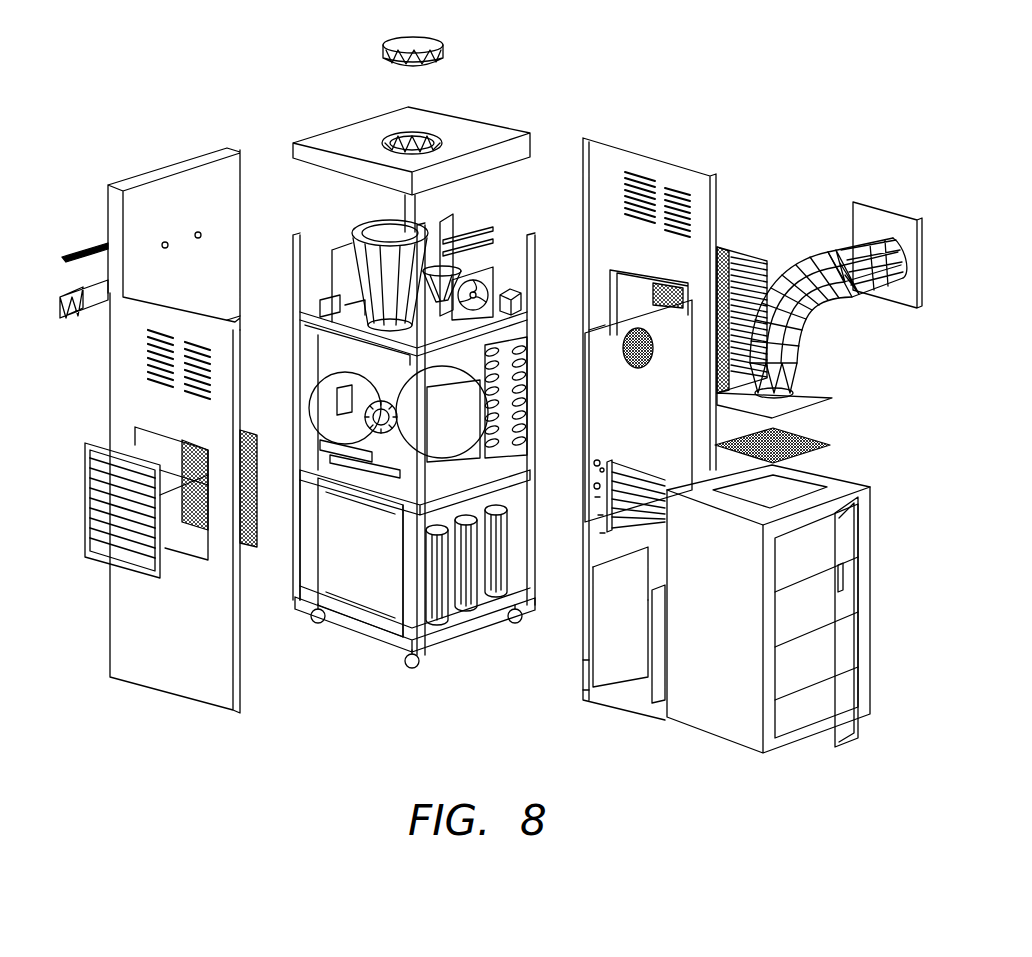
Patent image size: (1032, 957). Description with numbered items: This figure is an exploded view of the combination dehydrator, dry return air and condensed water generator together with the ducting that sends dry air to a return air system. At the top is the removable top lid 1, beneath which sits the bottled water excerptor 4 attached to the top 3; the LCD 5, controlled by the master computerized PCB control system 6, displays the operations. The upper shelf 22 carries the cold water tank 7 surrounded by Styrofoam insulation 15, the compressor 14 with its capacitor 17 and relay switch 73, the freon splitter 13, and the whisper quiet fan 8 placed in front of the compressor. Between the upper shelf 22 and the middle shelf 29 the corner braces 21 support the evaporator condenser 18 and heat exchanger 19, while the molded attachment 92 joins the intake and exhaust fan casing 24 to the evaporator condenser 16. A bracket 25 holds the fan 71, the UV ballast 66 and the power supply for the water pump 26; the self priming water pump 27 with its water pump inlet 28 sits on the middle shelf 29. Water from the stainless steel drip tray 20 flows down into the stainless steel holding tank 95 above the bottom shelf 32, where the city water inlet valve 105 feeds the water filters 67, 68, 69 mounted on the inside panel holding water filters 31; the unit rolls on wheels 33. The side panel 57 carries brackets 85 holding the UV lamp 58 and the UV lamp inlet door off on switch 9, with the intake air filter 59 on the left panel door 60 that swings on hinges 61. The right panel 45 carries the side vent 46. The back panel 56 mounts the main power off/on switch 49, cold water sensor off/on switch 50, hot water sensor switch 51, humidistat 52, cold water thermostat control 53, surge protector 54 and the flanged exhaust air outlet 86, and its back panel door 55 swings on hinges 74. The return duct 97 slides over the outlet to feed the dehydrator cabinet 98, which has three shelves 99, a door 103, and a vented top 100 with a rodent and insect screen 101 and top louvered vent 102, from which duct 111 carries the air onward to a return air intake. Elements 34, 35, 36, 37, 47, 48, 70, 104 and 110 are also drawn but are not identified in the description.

The top lid 1 is at (430, 32).
The top 3 is at (490, 126).
The bottled water excerptor 4 is at (418, 130).
The LCD 5 is at (480, 230).
The master computerized PCB control system 6 is at (482, 240).
The cold water tank 7 is at (372, 222).
The whisper quiet fan 8 is at (481, 291).
The UV lamp inlet door off on switch 9 is at (680, 270).
The freon splitter 13 is at (522, 304).
The compressor 14 is at (465, 272).
The Styrofoam insulation 15 is at (362, 228).
The evaporator condenser 16 is at (495, 445).
The capacitor 17 is at (340, 300).
The evaporator condenser 18 is at (503, 378).
The heat exchanger 19 is at (503, 395).
The stainless steel drip tray 20 is at (500, 460).
The corner braces 21 is at (293, 255).
The upper shelf 22 is at (500, 350).
The intake and exhaust fan casing 24 is at (505, 410).
The bracket 25 is at (350, 400).
The power supply for the water pump 26 is at (300, 472).
The self priming water pump 27 is at (366, 418).
The water pump inlet 28 is at (374, 427).
The middle shelf 29 is at (325, 459).
The inside panel holding water filters 31 is at (400, 545).
The bottom shelf 32 is at (455, 646).
The wheels 33 is at (311, 623).
The panel edge 34 is at (241, 322).
The side panel 35 is at (180, 162).
The strap 36 is at (78, 248).
The bar 37 is at (78, 286).
The right panel 45 is at (160, 690).
The side vent 46 is at (95, 440).
The filter strip 47 is at (247, 546).
The front panel 48 is at (685, 412).
The main power off/on switch 49 is at (597, 483).
The cold water sensor off/on switch 50 is at (602, 468).
The hot water sensor switch 51 is at (597, 460).
The humidistat 52 is at (598, 497).
The cold water thermostat control 53 is at (608, 508).
The surge protector 54 is at (615, 532).
The back panel door 55 is at (583, 690).
The back panel 56 is at (583, 660).
The side panel 57 is at (645, 152).
The UV lamp 58 is at (648, 285).
The intake air filter 59 is at (745, 262).
The left panel door 60 is at (735, 250).
The hinges 61 is at (165, 470).
The UV ballast 66 is at (338, 398).
The water filter 67 is at (432, 582).
The water filter 68 is at (452, 562).
The water filter 69 is at (475, 560).
The bracket 70 is at (335, 322).
The fan 71 is at (345, 380).
The relay switch 73 is at (345, 310).
The hinges 74 is at (648, 612).
The brackets 85 is at (615, 275).
The flanged exhaust air outlet 86 is at (612, 470).
The molded attachment 92 is at (518, 362).
The stainless steel holding tank 95 is at (340, 540).
The return duct 97 is at (648, 556).
The dehydrator cabinet 98 is at (700, 716).
The shelves 99 is at (790, 698).
The vented top 100 is at (815, 479).
The rodent and insect screen 101 is at (815, 441).
The top louvered vent 102 is at (815, 396).
The door 103 is at (850, 612).
The handle 104 is at (845, 580).
The city water inlet valve 105 is at (650, 479).
The support 110 is at (320, 443).
The duct 111 is at (825, 320).